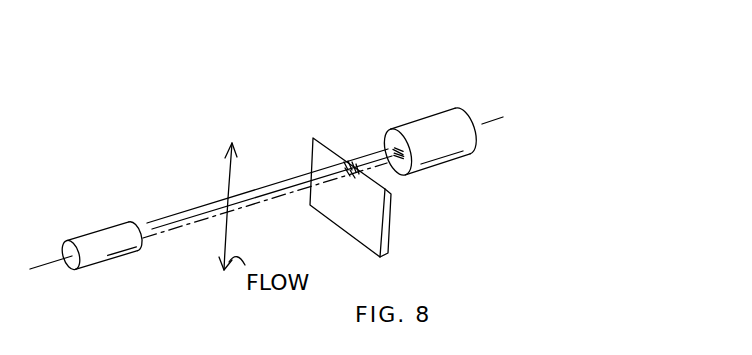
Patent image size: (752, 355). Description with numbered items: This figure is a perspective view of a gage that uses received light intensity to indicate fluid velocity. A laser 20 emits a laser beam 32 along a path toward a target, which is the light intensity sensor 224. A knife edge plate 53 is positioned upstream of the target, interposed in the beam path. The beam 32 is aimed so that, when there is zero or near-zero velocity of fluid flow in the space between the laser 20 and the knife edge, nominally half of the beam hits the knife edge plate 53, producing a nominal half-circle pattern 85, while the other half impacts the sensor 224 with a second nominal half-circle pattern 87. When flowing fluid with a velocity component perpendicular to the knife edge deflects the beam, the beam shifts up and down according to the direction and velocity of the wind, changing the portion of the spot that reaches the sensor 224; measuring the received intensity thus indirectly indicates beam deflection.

The laser 20 is at (111, 258).
The laser beam 32 is at (183, 210).
The knife edge plate 53 is at (393, 228).
The half-circle pattern 85 is at (345, 158).
The second half-circle pattern 87 is at (393, 146).
The light intensity sensor 224 is at (433, 167).